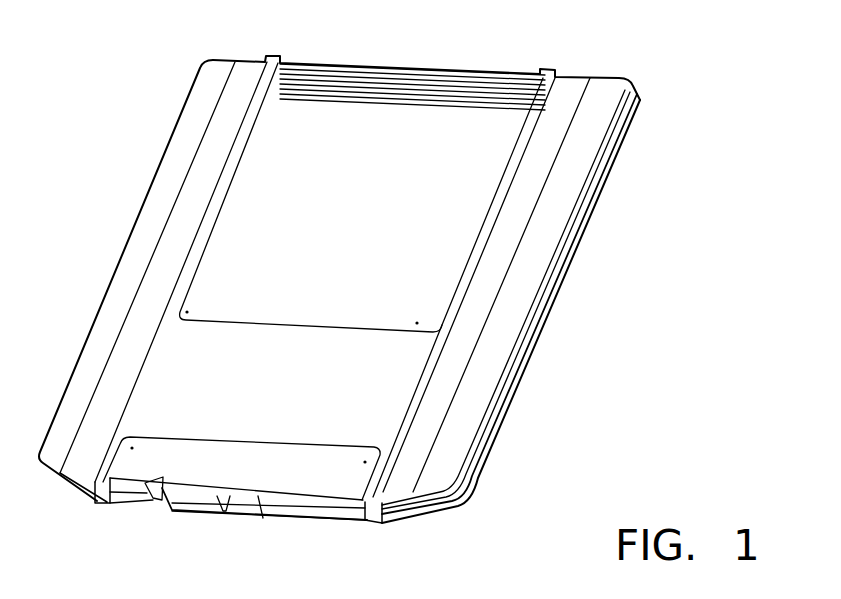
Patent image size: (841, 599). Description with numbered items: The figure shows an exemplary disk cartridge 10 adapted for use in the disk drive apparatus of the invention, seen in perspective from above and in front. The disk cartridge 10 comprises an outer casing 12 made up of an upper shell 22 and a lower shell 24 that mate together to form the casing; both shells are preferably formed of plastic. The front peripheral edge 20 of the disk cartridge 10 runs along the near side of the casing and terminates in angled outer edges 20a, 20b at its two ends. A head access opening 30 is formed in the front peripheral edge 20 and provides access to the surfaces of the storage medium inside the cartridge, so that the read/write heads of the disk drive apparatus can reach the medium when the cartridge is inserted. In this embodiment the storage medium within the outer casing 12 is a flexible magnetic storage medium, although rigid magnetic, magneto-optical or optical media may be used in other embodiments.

The disk cartridge 10 is at (339, 291).
The outer casing 12 is at (484, 72).
The front peripheral edge 20 is at (243, 527).
The angled outer edge 20a is at (433, 508).
The angled outer edge 20b is at (72, 500).
The upper shell 22 is at (490, 422).
The lower shell 24 is at (552, 303).
The head access opening 30 is at (244, 505).